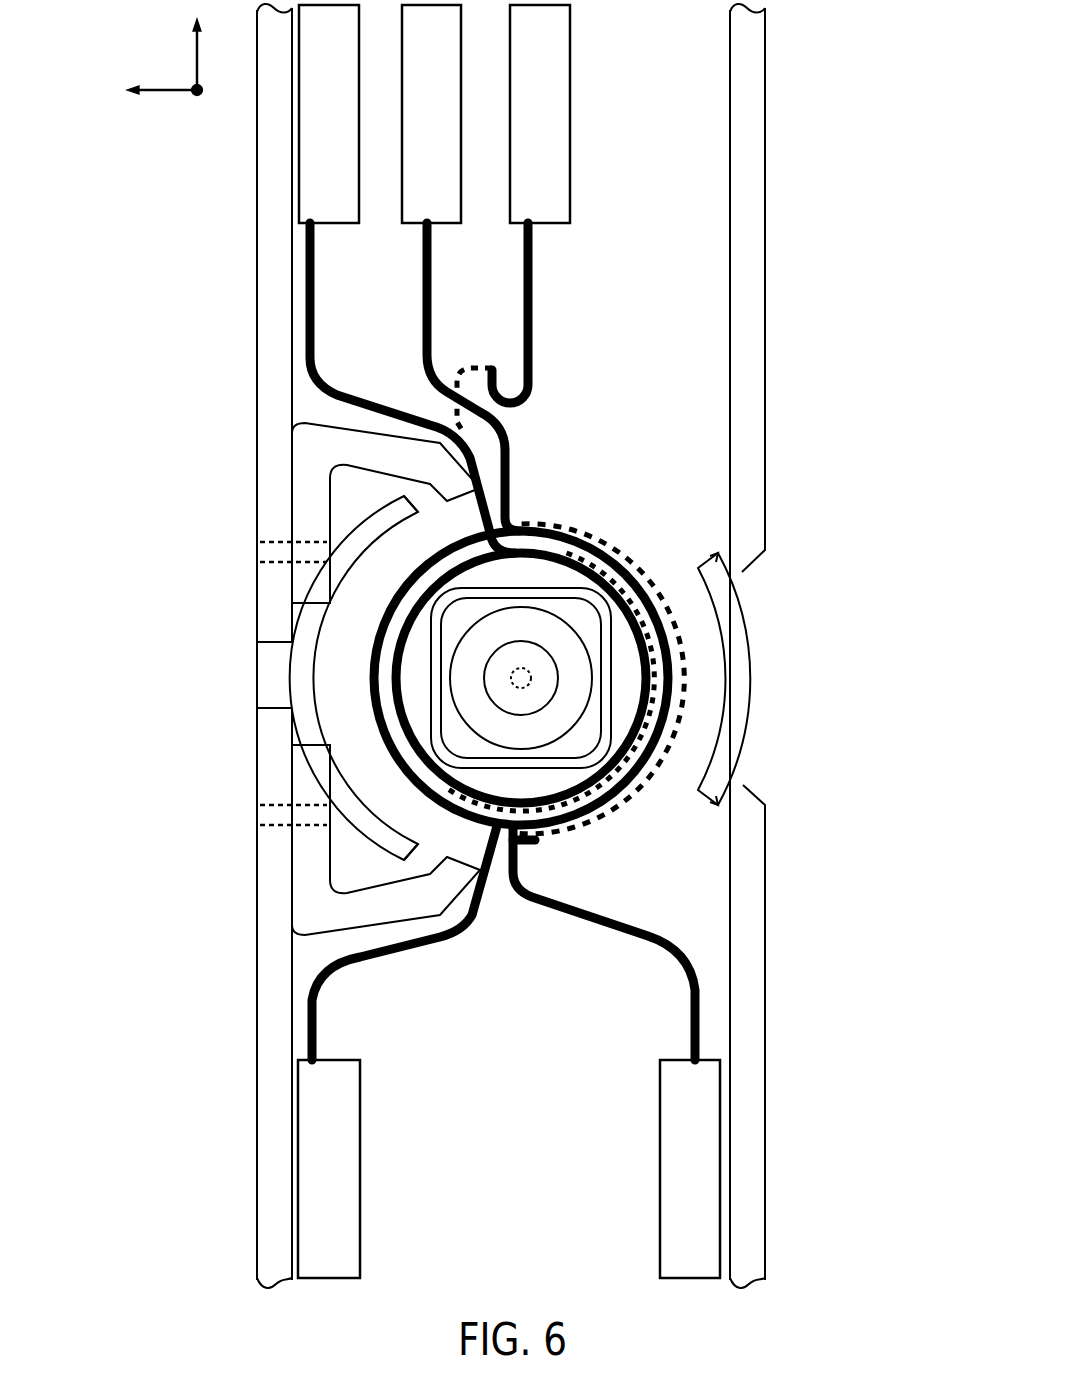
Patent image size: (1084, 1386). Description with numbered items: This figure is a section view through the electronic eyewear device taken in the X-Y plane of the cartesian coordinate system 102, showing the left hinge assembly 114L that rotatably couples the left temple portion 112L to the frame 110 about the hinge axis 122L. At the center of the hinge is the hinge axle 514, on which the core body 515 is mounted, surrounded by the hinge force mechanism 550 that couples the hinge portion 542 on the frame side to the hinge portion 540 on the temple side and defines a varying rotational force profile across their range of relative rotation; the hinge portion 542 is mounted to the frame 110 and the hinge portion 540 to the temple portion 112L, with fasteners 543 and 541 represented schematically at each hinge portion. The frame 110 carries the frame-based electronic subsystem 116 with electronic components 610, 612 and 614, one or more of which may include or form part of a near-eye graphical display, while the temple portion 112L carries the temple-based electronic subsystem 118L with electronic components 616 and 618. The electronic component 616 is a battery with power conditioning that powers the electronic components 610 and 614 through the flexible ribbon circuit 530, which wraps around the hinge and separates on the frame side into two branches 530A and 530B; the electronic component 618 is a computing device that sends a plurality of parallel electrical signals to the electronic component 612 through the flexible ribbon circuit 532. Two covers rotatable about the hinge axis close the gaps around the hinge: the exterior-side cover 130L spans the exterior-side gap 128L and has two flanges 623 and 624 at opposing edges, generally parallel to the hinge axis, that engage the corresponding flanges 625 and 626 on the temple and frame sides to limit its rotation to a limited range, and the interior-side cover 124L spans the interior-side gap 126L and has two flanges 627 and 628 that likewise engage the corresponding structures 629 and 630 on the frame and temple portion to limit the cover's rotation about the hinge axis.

The three-dimensional cartesian coordinate system 102 is at (164, 61).
The frame 110 is at (275, 259).
The left temple portion 112L is at (275, 1082).
The left hinge assembly 114L is at (556, 508).
The frame-based electronic subsystem 116 is at (590, 55).
The temple-based electronic subsystem 118L is at (337, 1307).
The hinge axis 122L is at (510, 672).
The interior-side cover 124L is at (793, 663).
The interior-side gap 126L is at (728, 622).
The exterior-side gap 128L is at (266, 680).
The exterior-side cover 130L is at (308, 636).
The hinge axle 514 is at (540, 663).
The core body 515 is at (600, 636).
The flexible ribbon circuit 530 is at (484, 497).
The branch of flexible ribbon circuit 530A is at (311, 284).
The branch of flexible ribbon circuit 530B is at (528, 284).
The flexible ribbon circuit 532 is at (424, 284).
The hinge portion 540 is at (308, 792).
The lower fasteners 541 is at (265, 815).
The hinge portion 542 is at (305, 533).
The upper fasteners 543 is at (265, 552).
The hinge force mechanism 550 is at (542, 730).
The electronic component 610 is at (345, 125).
The electronic component 612 is at (448, 125).
The electronic component 614 is at (556, 125).
The electronic component 616 is at (345, 1187).
The electronic component 618 is at (706, 1187).
The flange 623 is at (400, 856).
The flange 624 is at (400, 499).
The flange 625 is at (450, 880).
The flange 626 is at (447, 478).
The flange 627 is at (720, 554).
The flange 628 is at (720, 805).
The corresponding structure 629 is at (730, 584).
The corresponding structure 630 is at (730, 776).